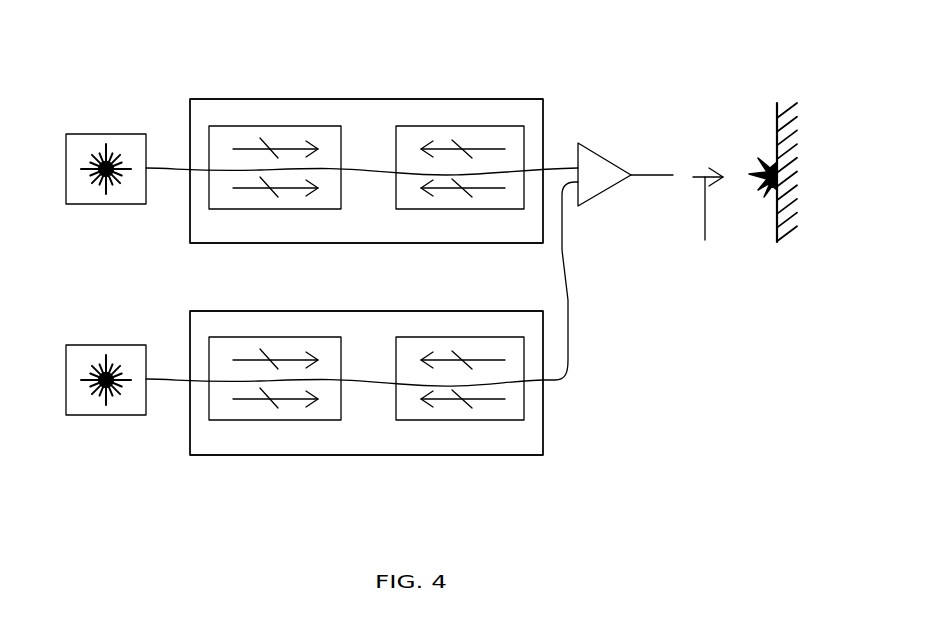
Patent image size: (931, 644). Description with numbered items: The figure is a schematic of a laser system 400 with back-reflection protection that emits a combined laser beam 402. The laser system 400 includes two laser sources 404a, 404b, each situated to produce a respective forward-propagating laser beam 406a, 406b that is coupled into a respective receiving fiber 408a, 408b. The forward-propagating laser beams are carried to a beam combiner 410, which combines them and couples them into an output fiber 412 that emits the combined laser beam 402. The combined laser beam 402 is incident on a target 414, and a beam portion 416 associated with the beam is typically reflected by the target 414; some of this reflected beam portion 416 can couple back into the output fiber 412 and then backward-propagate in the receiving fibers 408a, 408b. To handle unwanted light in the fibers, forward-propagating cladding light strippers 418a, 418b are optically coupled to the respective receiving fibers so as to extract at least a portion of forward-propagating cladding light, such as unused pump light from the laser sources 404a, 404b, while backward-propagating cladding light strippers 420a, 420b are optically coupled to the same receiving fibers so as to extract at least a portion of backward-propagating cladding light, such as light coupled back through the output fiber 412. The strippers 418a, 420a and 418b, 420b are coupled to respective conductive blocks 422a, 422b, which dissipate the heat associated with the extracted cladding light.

The laser system 400 is at (417, 287).
The combined laser beam 402 is at (705, 240).
The laser source 404a is at (115, 143).
The laser source 404b is at (115, 354).
The forward-propagating laser beam 406a is at (172, 166).
The forward-propagating laser beam 406b is at (172, 377).
The receiving fiber 408a is at (363, 168).
The receiving fiber 408b is at (365, 379).
The beam combiner 410 is at (597, 177).
The output fiber 412 is at (647, 175).
The target 414 is at (776, 125).
The beam portion 416 is at (760, 181).
The forward-propagating cladding light stripper 418a is at (286, 140).
The forward-propagating cladding light stripper 418b is at (286, 351).
The backward-propagating cladding light stripper 420a is at (482, 135).
The backward-propagating cladding light stripper 420b is at (482, 346).
The conductive block 422a is at (353, 230).
The conductive block 422b is at (320, 443).